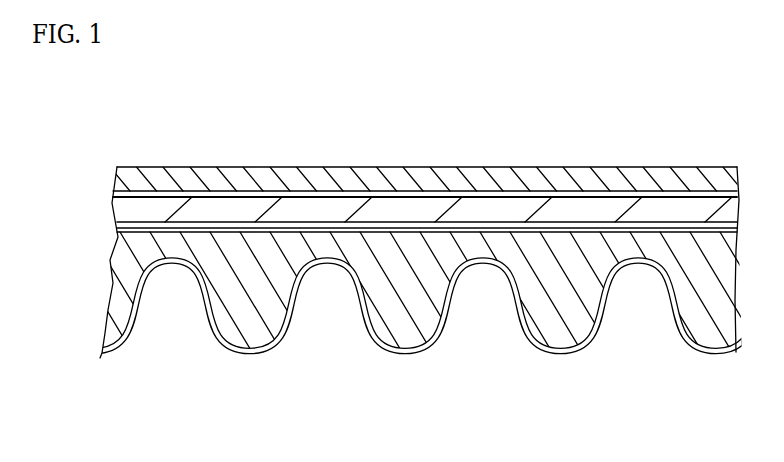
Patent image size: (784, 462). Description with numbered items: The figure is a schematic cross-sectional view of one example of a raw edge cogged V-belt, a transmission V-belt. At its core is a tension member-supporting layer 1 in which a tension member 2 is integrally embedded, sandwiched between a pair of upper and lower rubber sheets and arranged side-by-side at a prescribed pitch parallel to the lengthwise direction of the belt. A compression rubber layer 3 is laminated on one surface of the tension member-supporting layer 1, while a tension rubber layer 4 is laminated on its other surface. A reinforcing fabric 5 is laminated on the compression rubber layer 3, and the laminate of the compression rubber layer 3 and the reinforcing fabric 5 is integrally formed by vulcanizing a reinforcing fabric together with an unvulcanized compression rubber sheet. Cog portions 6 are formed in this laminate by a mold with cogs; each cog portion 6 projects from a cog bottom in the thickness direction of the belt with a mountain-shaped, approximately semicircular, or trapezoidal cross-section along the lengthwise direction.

The tension member-supporting layer 1 is at (207, 192).
The tension member 2 is at (606, 207).
The compression rubber layer 3 is at (263, 293).
The tension rubber layer 4 is at (510, 180).
The reinforcing fabric 5 is at (437, 337).
The cog portion 6 is at (575, 313).